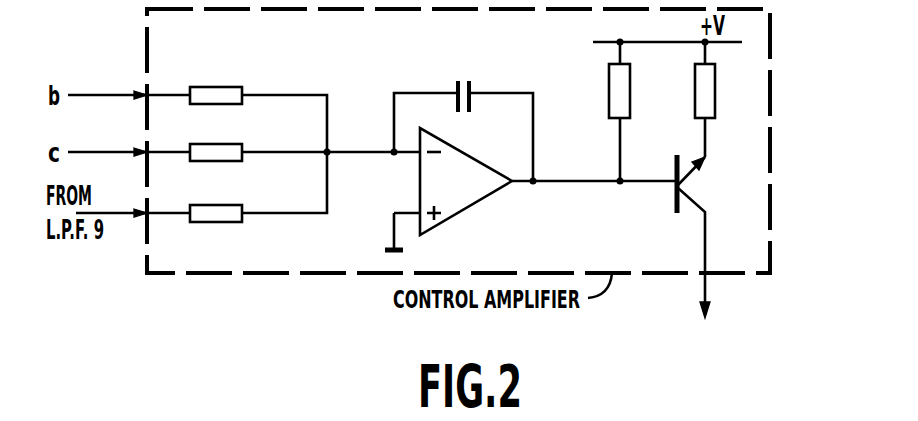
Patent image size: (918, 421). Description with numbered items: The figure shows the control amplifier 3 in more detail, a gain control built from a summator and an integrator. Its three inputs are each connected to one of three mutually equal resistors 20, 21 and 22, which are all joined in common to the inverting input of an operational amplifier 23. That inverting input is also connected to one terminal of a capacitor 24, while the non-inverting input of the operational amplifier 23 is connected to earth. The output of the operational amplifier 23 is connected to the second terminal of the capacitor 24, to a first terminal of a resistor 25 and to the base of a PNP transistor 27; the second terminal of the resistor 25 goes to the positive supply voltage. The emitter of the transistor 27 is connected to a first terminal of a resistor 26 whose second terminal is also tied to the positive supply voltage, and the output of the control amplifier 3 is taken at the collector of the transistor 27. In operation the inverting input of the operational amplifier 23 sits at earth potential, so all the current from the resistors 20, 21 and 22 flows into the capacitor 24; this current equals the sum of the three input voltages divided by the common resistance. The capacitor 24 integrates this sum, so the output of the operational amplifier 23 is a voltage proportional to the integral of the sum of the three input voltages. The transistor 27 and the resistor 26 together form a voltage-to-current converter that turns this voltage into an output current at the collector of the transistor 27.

The control amplifier 3 is at (778, 72).
The resistor 20 is at (210, 87).
The resistor 21 is at (210, 144).
The resistor 22 is at (210, 205).
The operational amplifier 23 is at (478, 205).
The capacitor 24 is at (473, 89).
The resistor 25 is at (630, 92).
The resistor 26 is at (715, 92).
The PNP transistor 27 is at (697, 184).